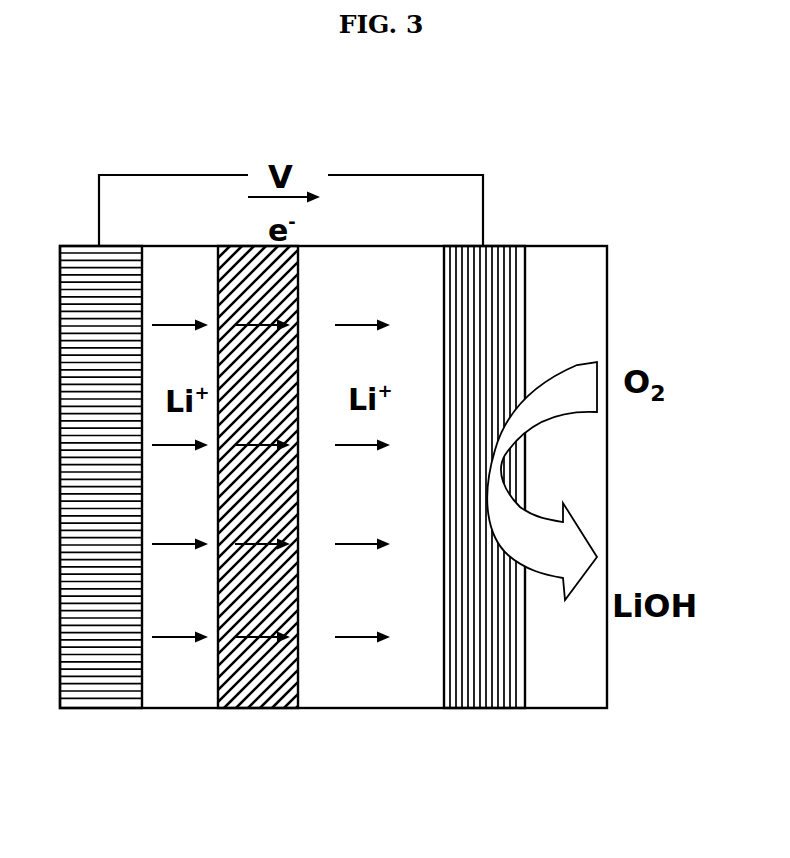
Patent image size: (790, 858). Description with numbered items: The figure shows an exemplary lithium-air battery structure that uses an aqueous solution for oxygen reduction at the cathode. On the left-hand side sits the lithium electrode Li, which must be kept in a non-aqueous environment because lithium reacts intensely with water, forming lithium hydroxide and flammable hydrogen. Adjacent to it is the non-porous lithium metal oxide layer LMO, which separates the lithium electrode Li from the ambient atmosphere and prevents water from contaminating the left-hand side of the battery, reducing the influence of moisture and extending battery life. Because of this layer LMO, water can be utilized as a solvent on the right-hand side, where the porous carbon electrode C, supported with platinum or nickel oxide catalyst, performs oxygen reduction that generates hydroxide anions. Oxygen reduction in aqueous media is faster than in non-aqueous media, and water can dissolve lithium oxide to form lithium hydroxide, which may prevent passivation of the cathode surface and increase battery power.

The lithium electrode Li is at (101, 477).
The lithium metal oxide layer LMO is at (250, 710).
The porous carbon electrode C is at (484, 477).